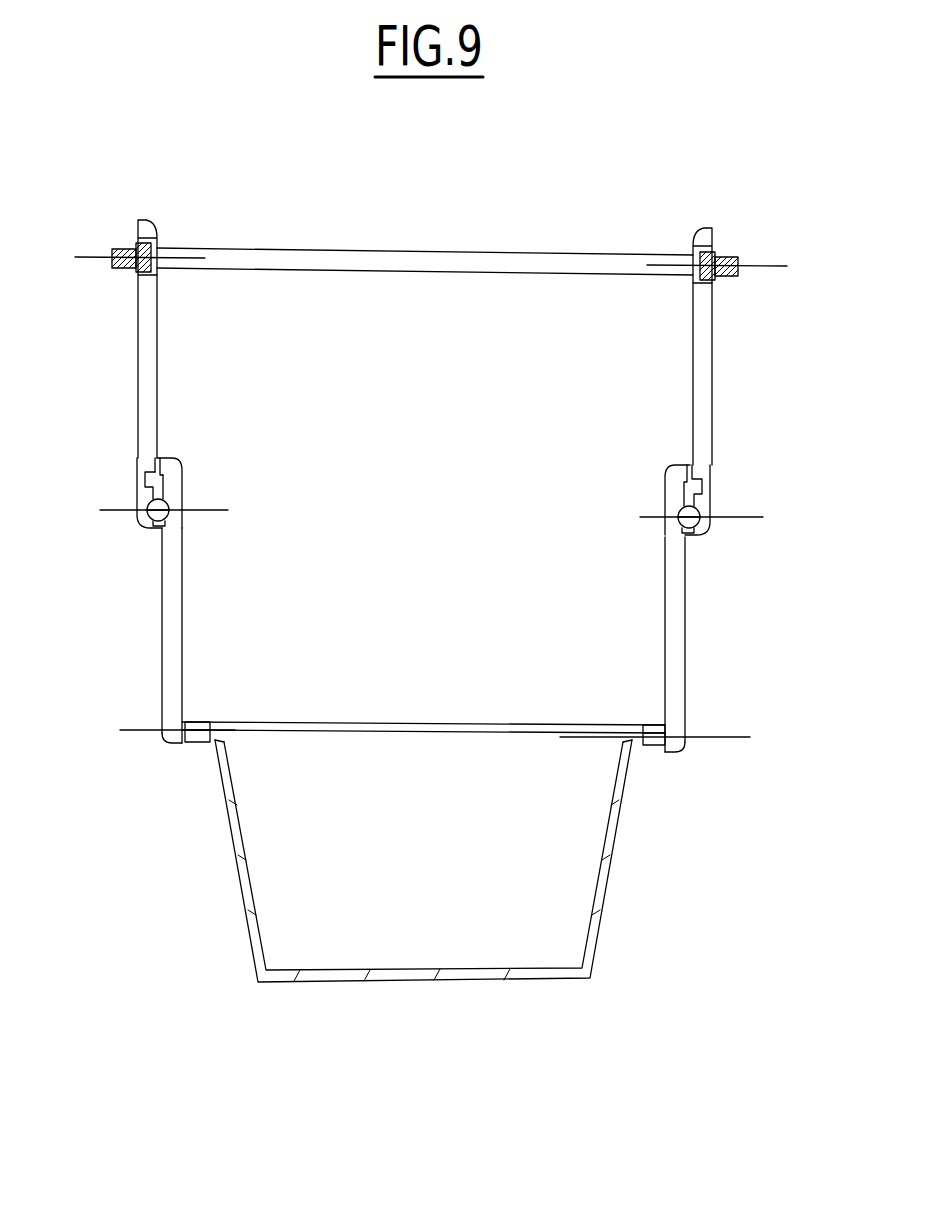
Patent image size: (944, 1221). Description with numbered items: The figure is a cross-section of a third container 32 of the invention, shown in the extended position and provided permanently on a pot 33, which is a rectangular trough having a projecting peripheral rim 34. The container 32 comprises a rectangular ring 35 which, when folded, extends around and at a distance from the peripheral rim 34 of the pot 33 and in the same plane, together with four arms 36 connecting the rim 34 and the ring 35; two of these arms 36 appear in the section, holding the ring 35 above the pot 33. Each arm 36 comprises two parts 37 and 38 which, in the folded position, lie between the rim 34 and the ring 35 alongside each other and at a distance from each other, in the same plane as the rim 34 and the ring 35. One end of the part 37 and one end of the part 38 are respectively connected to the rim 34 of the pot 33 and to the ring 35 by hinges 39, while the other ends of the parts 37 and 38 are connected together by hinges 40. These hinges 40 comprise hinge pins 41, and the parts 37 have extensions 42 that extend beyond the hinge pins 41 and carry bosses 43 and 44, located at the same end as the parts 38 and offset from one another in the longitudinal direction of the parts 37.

The container 32 is at (740, 452).
The pot 33 is at (613, 853).
The peripheral rim 34 is at (190, 746).
The rectangular ring 35 is at (541, 262).
The arms 36 is at (436, 640).
The part of the arm 37 is at (172, 617).
The part of the arm 38 is at (148, 363).
The hinges 39 is at (122, 236).
The hinges 40 is at (161, 534).
The hinge pins 41 is at (166, 522).
The extensions 42 is at (162, 469).
The boss 43 is at (155, 466).
The boss 44 is at (147, 483).